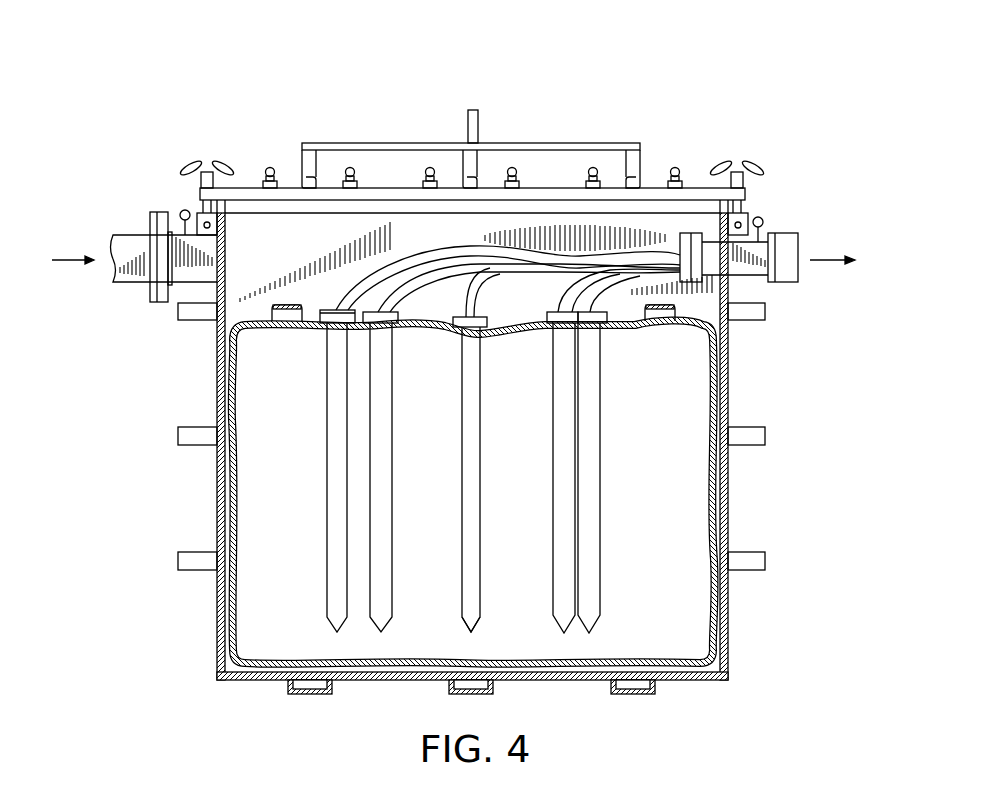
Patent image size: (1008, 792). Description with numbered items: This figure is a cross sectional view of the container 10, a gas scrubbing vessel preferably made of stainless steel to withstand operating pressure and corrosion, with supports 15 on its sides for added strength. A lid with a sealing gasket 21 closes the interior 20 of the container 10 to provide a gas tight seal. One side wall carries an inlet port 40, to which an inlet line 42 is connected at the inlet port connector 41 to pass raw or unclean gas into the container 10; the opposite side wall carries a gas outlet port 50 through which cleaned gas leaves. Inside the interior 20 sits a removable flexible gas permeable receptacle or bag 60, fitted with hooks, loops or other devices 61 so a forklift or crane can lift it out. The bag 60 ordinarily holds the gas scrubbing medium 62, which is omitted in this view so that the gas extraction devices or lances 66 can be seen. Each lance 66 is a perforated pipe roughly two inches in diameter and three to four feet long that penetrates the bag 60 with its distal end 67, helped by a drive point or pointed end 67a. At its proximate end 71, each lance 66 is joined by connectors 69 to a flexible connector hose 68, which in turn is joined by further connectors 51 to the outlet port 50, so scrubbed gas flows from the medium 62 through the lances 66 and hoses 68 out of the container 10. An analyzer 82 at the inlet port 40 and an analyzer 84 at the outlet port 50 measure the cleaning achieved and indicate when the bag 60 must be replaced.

The container 10 is at (190, 100).
The supports 15 is at (765, 435).
The interior 20 is at (313, 233).
The sealing gasket 21 is at (724, 210).
The inlet port 40 is at (158, 212).
The inlet port connector 41 is at (165, 302).
The inlet line 42 is at (130, 283).
The gas outlet port 50 is at (780, 283).
The connectors 51 is at (696, 233).
The gas permeable receptacle or bag 60 is at (215, 600).
The hooks, loops or other devices 61 is at (312, 325).
The gas scrubbing medium 62 is at (257, 510).
The gas extraction device or lance 66 is at (462, 372).
The distal end 67 is at (462, 598).
The drive point or pointed end 67a is at (471, 632).
The flexible connector hose 68 is at (573, 250).
The connectors 69 is at (475, 277).
The proximate end 71 is at (484, 332).
The analyzer 82 is at (185, 210).
The analyzer 84 is at (762, 218).